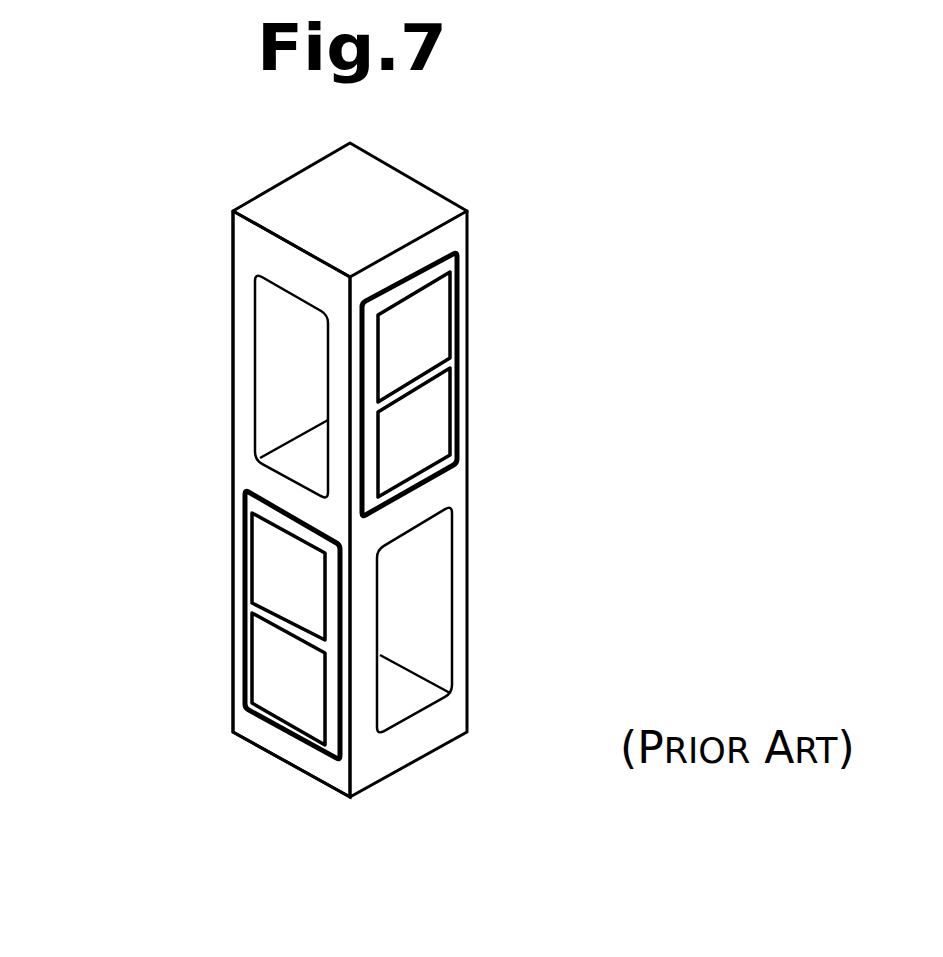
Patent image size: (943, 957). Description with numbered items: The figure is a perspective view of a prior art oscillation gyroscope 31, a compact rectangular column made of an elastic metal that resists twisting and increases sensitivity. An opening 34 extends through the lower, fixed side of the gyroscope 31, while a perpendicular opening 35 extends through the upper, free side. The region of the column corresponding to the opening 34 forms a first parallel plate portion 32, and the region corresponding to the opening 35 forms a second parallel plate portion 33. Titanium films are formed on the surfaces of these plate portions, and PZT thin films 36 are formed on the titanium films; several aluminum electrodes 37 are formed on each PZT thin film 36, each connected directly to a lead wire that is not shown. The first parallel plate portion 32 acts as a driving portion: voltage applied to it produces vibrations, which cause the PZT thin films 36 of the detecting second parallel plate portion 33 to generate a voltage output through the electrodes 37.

The oscillation gyroscope 31 is at (550, 163).
The first parallel plate portion 32 is at (160, 565).
The second parallel plate portion 33 is at (159, 324).
The opening 34 is at (432, 610).
The perpendicular opening 35 is at (270, 378).
The PZT thin film 36 is at (437, 470).
The electrode 37 is at (440, 413).